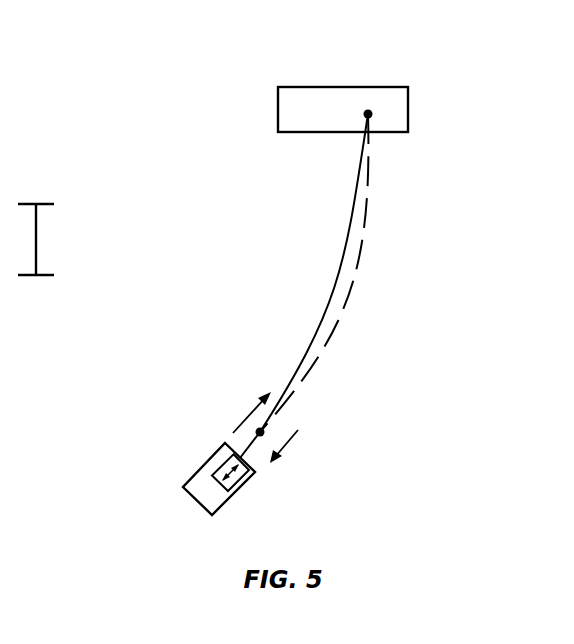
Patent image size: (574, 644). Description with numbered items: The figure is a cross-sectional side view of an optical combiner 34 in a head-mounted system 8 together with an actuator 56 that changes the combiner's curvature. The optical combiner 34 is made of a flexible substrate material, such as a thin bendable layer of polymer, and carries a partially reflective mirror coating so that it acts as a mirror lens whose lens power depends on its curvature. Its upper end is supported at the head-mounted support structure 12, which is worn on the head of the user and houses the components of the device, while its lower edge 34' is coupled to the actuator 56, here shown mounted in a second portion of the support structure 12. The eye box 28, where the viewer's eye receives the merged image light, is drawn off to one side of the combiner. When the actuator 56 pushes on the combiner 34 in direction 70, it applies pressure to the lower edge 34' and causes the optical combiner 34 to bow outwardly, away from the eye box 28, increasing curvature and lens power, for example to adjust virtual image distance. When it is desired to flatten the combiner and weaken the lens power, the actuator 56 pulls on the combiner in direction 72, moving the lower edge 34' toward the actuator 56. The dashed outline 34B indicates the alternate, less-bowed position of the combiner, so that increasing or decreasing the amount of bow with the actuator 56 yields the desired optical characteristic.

The support structure 12 is at (338, 97).
The system 8 is at (498, 140).
The eye box 28 is at (50, 203).
The optical combiner 34 is at (306, 284).
The alternate line position 34B is at (355, 282).
The lower edge 34' is at (258, 471).
The actuator 56 is at (212, 473).
The direction 70 is at (253, 412).
The direction 72 is at (292, 438).